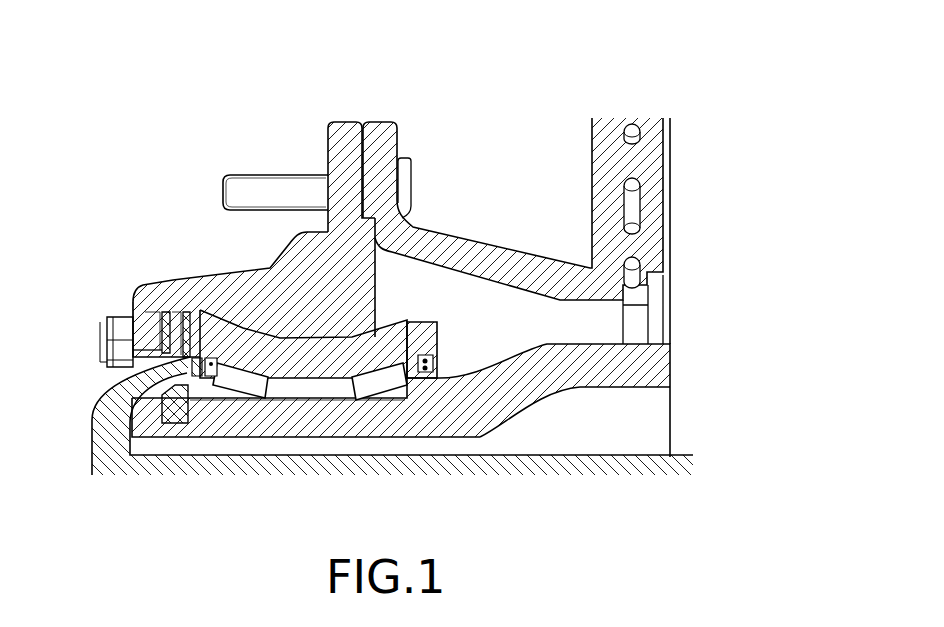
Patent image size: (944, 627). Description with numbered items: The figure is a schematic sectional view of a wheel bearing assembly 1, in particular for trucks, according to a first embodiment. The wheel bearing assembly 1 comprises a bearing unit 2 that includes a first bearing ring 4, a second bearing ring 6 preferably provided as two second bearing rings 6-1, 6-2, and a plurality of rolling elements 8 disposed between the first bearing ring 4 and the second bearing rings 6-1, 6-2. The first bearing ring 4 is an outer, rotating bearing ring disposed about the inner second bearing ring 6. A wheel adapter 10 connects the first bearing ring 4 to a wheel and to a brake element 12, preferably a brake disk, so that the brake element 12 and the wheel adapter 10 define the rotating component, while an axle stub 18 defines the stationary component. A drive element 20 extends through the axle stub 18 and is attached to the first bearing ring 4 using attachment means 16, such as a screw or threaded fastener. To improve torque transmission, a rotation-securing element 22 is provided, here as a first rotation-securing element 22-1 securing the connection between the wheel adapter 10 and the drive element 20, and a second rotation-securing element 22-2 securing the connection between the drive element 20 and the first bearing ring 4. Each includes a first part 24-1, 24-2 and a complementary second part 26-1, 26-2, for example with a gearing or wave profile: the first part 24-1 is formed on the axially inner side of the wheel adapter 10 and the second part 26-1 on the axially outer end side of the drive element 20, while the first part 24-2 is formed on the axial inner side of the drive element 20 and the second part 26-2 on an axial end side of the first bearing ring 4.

The wheel bearing assembly 1 is at (577, 73).
The bearing unit 2 is at (371, 315).
The first bearing ring 4 is at (330, 338).
The second bearing ring 6 is at (313, 433).
The second bearing ring 6-1 is at (393, 408).
The second bearing ring 6-2 is at (243, 410).
The rolling elements 8 is at (247, 378).
The wheel adapter 10 is at (237, 287).
The brake element 12 is at (482, 255).
The attachment means 16 is at (113, 323).
The axle stub 18 is at (528, 390).
The drive element 20 is at (105, 465).
The rotation-securing element 22 is at (144, 273).
The first rotation-securing element 22-1 is at (152, 335).
The second rotation-securing element 22-2 is at (184, 315).
The first part 24-1 is at (188, 358).
The first part 24-2 is at (185, 357).
The second part 26-1 is at (166, 314).
The second part 26-2 is at (200, 315).